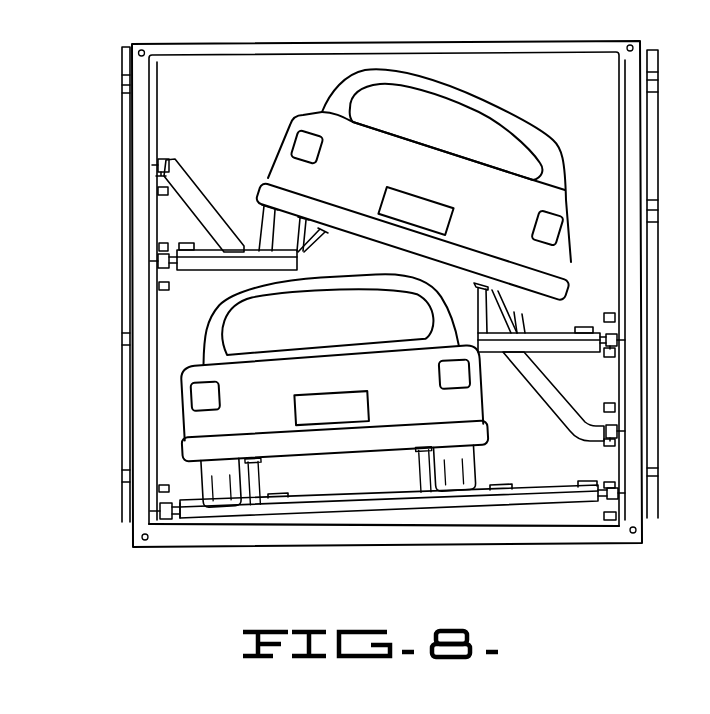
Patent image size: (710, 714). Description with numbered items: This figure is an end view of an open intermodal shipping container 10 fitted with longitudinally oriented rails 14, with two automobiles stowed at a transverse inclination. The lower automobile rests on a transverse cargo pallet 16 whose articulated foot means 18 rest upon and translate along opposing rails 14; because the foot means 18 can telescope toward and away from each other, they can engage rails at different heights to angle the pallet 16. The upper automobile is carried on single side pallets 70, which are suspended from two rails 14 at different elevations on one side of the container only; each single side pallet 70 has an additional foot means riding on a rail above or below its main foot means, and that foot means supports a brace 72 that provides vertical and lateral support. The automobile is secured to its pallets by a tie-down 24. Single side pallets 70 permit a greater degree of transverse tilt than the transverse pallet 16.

The intermodal shipping container 10 is at (348, 42).
The longitudinally oriented rails 14 is at (168, 162).
The transverse cargo pallet 16 is at (516, 500).
The articulated foot means 18 is at (152, 164).
The tie-down 24 is at (313, 239).
The single side pallet 70 is at (216, 264).
The brace 72 is at (208, 188).